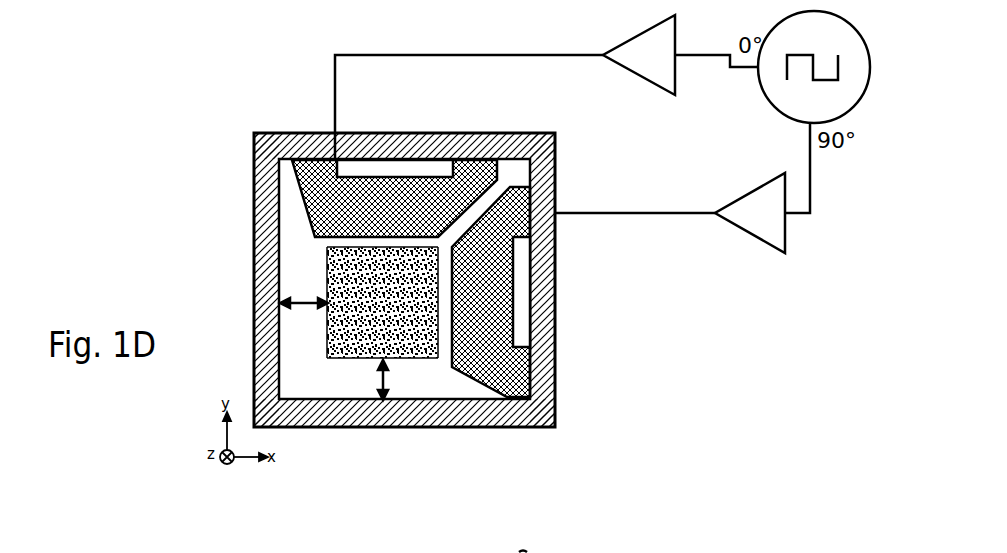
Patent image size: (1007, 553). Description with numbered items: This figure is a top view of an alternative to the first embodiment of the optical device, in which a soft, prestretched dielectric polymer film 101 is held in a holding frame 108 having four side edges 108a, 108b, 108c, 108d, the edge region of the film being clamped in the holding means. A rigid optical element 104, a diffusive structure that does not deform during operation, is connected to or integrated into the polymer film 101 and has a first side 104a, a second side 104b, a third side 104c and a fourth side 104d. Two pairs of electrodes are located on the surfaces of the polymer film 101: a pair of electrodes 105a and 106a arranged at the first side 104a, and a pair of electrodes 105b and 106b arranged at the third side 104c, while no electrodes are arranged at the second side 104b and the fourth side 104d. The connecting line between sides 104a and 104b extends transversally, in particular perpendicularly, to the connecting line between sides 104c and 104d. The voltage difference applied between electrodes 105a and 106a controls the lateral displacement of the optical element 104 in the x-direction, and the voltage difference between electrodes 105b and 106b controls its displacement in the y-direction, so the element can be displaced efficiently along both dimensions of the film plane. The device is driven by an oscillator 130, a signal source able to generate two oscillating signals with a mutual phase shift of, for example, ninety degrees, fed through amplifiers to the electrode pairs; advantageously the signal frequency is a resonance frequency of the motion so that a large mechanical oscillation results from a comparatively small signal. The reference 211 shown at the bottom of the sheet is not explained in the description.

The polymer film 101 is at (432, 377).
The rigid optical element 104 is at (356, 327).
The first side of optical element 104a is at (438, 323).
The second side of optical element 104b is at (328, 330).
The third side of optical element 104c is at (373, 247).
The fourth side of optical element 104d is at (360, 360).
The first electrode 105a is at (543, 307).
The first electrode 105b is at (379, 153).
The second electrode 106a is at (513, 360).
The second electrode 106b is at (470, 160).
The second holding frame 108 is at (410, 294).
The first side edge of frame 108a is at (542, 313).
The second side edge of frame 108b is at (262, 273).
The third side edge of frame 108c is at (503, 143).
The fourth side edge of frame 108d is at (327, 417).
The oscillator 130 is at (772, 93).
The element 211 is at (522, 535).